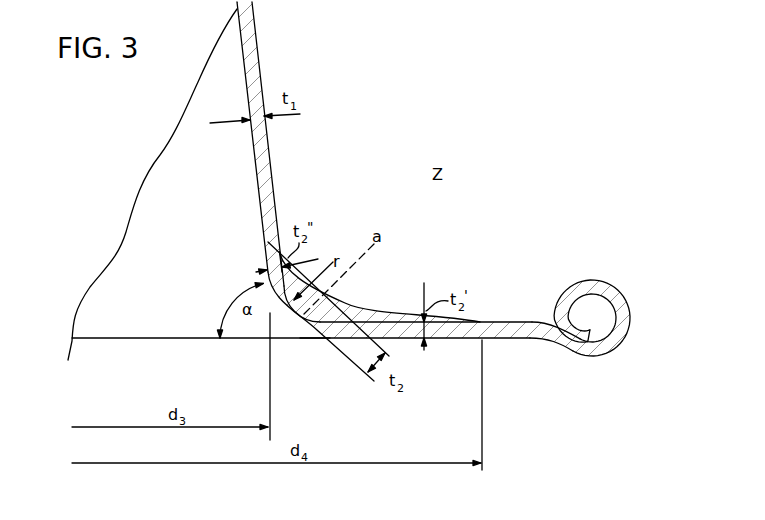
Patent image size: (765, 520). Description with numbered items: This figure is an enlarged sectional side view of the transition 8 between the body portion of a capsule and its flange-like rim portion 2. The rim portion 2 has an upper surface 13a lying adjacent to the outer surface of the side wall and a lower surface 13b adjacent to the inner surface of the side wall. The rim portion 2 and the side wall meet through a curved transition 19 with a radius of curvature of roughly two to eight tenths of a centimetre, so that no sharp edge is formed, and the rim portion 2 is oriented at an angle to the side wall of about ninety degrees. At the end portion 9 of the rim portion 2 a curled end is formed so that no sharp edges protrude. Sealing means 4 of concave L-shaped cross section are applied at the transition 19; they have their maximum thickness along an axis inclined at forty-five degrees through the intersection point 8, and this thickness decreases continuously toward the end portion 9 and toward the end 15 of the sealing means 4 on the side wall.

The rim portion 2 is at (432, 302).
The sealing means 4 is at (372, 311).
The transition 8 is at (268, 340).
The end portion 9 is at (628, 318).
The upper surface 13a is at (488, 321).
The lower surface 13b is at (493, 340).
The end of the sealing means 15 is at (281, 248).
The transition 19 is at (290, 338).